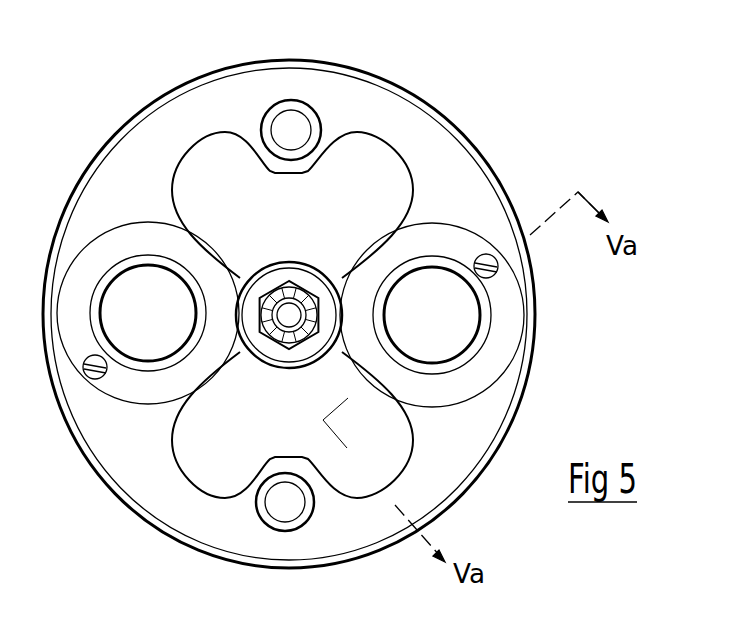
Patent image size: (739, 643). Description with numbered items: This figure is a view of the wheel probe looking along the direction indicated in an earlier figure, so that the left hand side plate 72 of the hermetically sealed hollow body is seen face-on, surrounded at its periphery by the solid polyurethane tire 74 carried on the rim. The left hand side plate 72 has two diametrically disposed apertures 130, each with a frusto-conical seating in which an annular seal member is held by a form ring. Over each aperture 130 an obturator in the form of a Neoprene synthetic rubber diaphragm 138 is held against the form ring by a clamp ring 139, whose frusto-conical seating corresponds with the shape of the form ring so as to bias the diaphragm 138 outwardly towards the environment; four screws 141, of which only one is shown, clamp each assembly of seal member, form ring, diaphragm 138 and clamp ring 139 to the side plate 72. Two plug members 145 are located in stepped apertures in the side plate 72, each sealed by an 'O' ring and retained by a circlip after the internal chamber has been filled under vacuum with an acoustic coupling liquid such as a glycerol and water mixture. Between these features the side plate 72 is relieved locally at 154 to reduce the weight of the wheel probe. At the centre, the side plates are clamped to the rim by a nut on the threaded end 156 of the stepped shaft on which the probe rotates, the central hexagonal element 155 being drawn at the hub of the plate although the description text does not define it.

The left hand side plate 72 is at (222, 93).
The tire 74 is at (493, 167).
The local relief 154 is at (352, 195).
The plug member 145 is at (297, 118).
The clamp ring 139 is at (105, 231).
The aperture 130 is at (133, 338).
The diaphragm 138 is at (127, 278).
The screw 141 is at (493, 270).
The hexagonal nut 155 is at (288, 346).
The threaded end 156 is at (283, 318).